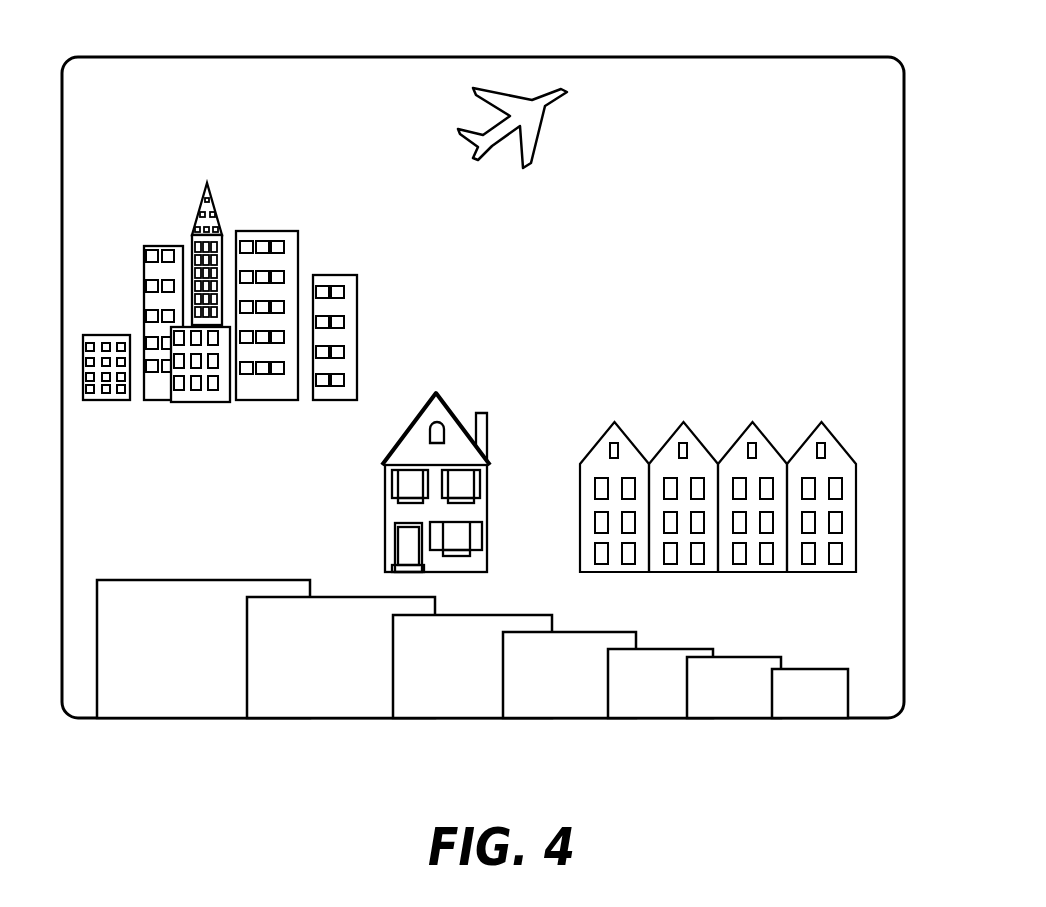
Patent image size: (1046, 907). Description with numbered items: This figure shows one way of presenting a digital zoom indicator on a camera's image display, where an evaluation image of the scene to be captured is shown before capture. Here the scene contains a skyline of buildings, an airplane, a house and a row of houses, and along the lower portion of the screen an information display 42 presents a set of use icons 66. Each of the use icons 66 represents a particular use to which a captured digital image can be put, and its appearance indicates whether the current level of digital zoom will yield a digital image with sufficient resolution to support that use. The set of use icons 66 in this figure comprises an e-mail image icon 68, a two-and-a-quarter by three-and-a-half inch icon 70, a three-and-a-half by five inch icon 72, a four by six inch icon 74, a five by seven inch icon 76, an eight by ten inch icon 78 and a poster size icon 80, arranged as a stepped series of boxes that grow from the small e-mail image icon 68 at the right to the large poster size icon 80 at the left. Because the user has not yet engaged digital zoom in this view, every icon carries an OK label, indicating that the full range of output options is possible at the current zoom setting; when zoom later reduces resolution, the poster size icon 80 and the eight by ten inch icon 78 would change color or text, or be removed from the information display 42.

The information display 42 is at (380, 57).
The set of use icons 66 is at (527, 681).
The e-mail image icon 68 is at (828, 708).
The 2.25"×3.5" icon 70 is at (740, 708).
The 3.5"×5" icon 72 is at (652, 706).
The 4"×6" icon 74 is at (561, 705).
The 5"×7" icon 76 is at (431, 705).
The 8"×10" icon 78 is at (330, 700).
The poster size icon 80 is at (153, 700).